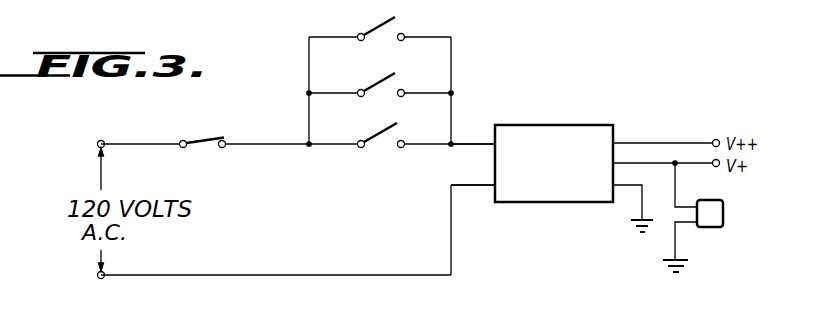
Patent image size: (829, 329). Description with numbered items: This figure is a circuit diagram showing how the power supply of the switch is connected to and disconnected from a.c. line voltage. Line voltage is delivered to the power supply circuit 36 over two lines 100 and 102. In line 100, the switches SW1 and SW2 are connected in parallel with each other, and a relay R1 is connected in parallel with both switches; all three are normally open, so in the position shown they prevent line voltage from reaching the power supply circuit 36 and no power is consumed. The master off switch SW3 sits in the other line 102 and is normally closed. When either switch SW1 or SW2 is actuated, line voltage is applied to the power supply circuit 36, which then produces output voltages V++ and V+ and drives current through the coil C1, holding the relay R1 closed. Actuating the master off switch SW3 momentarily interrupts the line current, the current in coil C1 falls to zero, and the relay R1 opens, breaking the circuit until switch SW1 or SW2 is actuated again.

The power supply circuit 36 is at (540, 203).
The line 100 is at (472, 143).
The line 102 is at (467, 185).
The switch SW1 is at (380, 21).
The switch SW2 is at (380, 78).
The master off switch SW3 is at (205, 130).
The relay R1 is at (381, 148).
The coil C1 is at (709, 217).